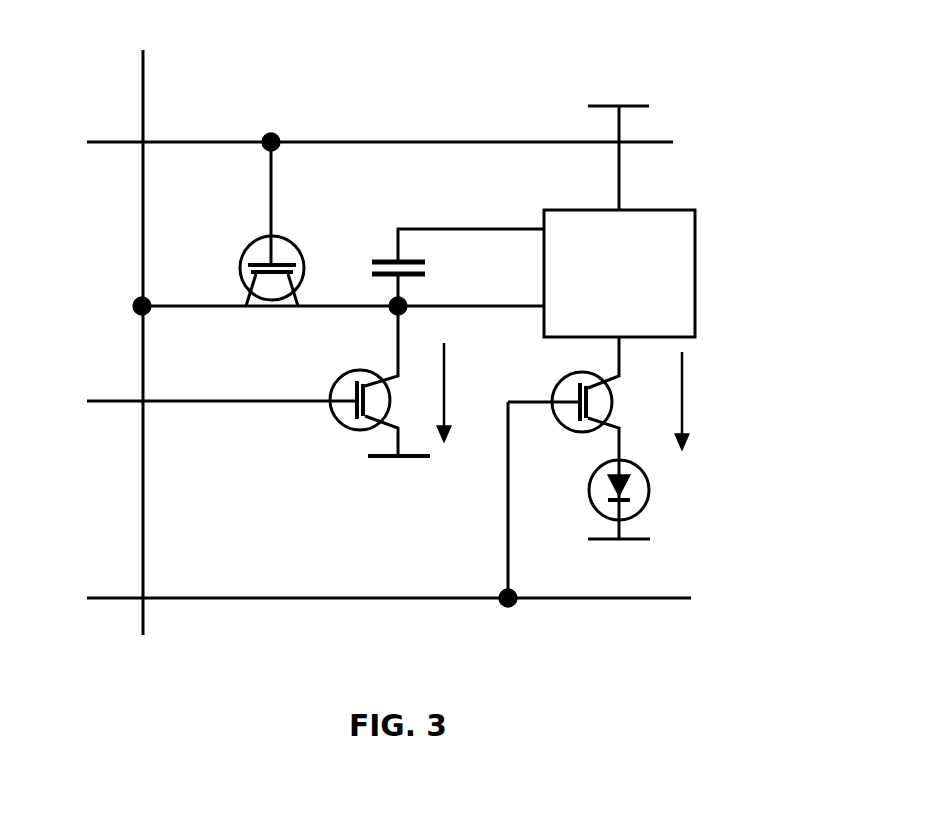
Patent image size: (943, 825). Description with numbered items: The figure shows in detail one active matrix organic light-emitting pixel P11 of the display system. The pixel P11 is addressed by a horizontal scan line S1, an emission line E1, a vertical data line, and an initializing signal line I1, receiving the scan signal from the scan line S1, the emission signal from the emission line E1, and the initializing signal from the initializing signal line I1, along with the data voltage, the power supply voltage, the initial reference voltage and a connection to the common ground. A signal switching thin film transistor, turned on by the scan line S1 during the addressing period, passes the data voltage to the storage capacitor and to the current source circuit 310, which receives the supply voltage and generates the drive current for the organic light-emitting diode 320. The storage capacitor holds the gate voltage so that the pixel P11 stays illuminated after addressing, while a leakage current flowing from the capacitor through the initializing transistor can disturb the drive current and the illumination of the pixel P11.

The pixel P11 is at (728, 50).
The horizontal scan line S1 is at (112, 144).
The initializing signal line I1 is at (117, 403).
The emission line E1 is at (117, 600).
The current source circuit 310 is at (619, 211).
The organic light-emitting diode 320 is at (647, 501).